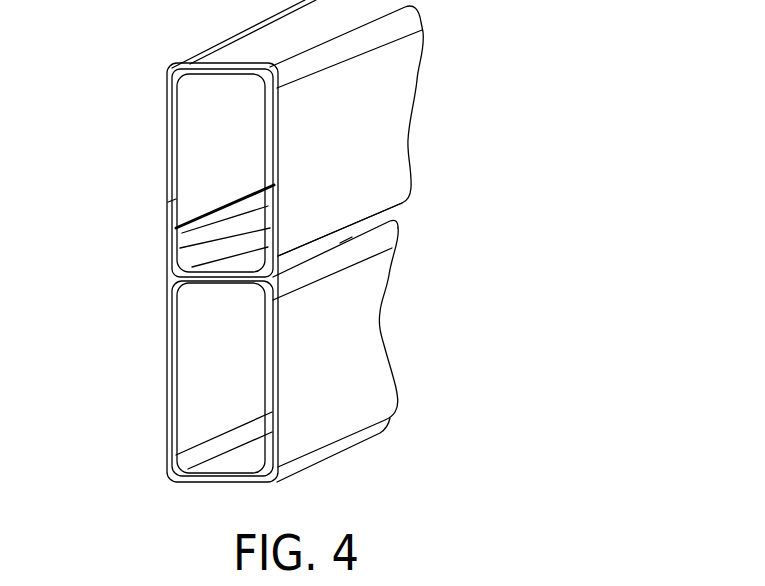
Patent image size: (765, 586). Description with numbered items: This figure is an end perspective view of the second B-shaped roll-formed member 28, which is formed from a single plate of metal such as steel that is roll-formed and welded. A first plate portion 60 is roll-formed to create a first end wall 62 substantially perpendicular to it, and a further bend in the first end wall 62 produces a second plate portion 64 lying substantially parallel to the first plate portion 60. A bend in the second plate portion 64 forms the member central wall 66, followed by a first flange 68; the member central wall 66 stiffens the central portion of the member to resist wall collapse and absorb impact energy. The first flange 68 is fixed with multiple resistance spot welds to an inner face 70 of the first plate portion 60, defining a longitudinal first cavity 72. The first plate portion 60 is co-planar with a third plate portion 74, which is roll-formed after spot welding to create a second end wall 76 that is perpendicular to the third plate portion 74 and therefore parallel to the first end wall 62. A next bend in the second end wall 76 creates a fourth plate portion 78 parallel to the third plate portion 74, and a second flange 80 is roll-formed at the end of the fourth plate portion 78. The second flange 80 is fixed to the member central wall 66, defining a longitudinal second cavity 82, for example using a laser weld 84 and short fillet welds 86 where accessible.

The second B-shaped roll-formed member 28 is at (125, 104).
The first plate portion 60 is at (168, 432).
The first end wall 62 is at (205, 476).
The second plate portion 64 is at (276, 354).
The member central wall 66 is at (181, 298).
The first flange 68 is at (168, 242).
The inner face 70 is at (150, 207).
The longitudinal first cavity 72 is at (182, 368).
The third plate portion 74 is at (168, 172).
The second end wall 76 is at (222, 68).
The fourth plate portion 78 is at (276, 117).
The second flange 80 is at (266, 263).
The longitudinal second cavity 82 is at (190, 133).
The laser weld 84 is at (370, 250).
The short fillet welds 86 is at (246, 255).